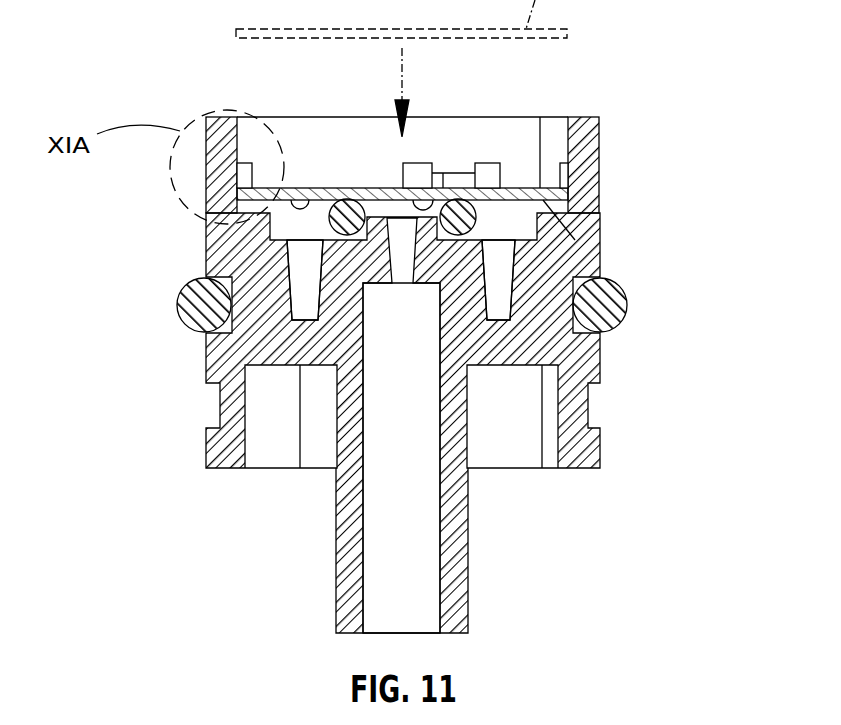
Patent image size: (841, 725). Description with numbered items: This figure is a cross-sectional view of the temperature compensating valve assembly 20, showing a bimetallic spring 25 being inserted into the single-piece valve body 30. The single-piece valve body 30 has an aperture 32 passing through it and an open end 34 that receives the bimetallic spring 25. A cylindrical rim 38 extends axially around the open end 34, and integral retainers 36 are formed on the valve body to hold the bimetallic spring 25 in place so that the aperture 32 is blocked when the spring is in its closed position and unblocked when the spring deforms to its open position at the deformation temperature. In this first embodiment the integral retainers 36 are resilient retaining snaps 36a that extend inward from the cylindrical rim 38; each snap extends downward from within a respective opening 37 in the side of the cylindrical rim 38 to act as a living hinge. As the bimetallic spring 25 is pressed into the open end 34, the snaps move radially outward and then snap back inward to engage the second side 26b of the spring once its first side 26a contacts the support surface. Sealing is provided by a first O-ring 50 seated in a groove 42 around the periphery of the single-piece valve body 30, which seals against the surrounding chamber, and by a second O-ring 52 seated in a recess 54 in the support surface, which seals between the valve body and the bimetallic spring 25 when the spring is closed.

The temperature compensating valve assembly 20 is at (628, 52).
The bimetallic spring 25 is at (552, 190).
The first side 26a is at (290, 200).
The second side 26b is at (318, 188).
The single-piece valve body 30 is at (594, 453).
The aperture 32 is at (408, 452).
The open end 34 is at (528, 120).
The integral retainers 36 is at (478, 135).
The resilient retaining snaps 36a is at (453, 178).
The opening 37 is at (441, 172).
The cylindrical rim 38 is at (229, 112).
The groove 42 is at (578, 352).
The first O-ring 50 is at (630, 293).
The second O-ring 52 is at (468, 215).
The recess 54 is at (290, 229).